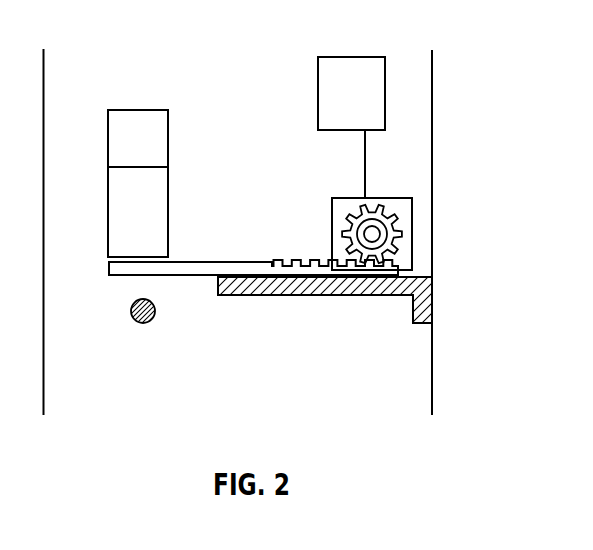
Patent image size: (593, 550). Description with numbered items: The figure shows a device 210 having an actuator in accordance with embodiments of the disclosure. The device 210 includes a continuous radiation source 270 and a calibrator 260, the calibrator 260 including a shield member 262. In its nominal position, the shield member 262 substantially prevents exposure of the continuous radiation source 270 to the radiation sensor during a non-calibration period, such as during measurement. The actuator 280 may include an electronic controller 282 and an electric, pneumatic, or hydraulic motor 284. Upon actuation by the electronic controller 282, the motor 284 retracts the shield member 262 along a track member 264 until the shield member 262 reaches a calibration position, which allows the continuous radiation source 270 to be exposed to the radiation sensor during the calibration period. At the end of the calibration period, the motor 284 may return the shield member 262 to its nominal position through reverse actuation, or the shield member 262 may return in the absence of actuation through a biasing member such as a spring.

The device 210 is at (478, 52).
The calibrator 260 is at (302, 262).
The shield member 262 is at (210, 260).
The track member 264 is at (323, 295).
The continuous radiation source 270 is at (141, 325).
The actuator 280 is at (336, 163).
The electronic controller 282 is at (317, 93).
The motor 284 is at (358, 198).